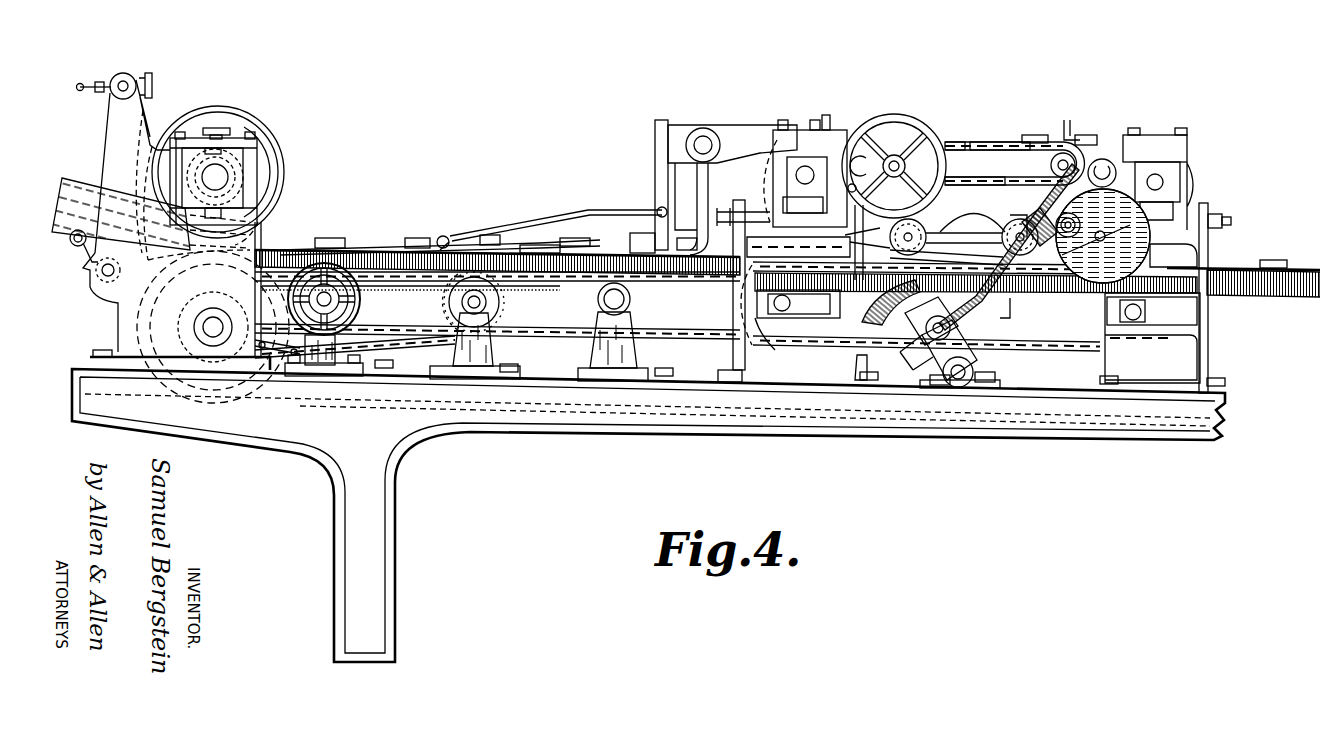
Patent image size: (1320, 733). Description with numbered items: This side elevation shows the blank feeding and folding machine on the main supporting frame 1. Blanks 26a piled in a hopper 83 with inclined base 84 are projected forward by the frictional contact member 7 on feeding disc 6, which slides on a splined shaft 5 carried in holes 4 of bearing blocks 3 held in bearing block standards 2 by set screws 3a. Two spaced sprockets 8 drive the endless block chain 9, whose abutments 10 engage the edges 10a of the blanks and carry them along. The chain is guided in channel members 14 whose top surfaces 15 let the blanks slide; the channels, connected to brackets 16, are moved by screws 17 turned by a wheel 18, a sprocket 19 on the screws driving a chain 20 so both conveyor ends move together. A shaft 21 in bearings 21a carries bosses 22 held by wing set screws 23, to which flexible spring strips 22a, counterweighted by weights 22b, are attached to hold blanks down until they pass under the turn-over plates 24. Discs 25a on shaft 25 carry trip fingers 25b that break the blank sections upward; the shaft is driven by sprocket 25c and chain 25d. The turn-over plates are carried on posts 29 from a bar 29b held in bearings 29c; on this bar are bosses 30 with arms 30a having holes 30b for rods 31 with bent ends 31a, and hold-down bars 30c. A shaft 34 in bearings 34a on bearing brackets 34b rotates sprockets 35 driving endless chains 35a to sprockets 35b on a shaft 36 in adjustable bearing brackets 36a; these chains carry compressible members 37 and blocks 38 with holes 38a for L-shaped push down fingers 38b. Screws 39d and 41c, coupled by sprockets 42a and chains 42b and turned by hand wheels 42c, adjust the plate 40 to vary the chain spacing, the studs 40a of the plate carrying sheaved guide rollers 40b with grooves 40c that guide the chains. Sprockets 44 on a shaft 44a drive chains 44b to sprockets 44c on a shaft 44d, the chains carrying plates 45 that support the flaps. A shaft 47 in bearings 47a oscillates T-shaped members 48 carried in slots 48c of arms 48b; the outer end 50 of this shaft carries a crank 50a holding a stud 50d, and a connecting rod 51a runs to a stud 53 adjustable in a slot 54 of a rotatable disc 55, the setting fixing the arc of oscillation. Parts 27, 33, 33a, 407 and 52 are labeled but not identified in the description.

The main supporting frame 1 is at (578, 437).
The bearing block standards 2 is at (240, 142).
The bearing blocks 3 is at (228, 135).
The set screws 3a is at (212, 125).
The holes 4 is at (228, 175).
The splined shaft 5 is at (262, 150).
The feeding disc 6 is at (245, 108).
The frictional contact member 7 is at (255, 150).
The sprockets 8 is at (130, 326).
The endless block chain 9 is at (397, 245).
The abutments 10 is at (518, 250).
The edges of the blanks 10a is at (543, 240).
The channel members 14 is at (422, 262).
The top surfaces of the channels 15 is at (485, 258).
The brackets 16 is at (305, 262).
The screws 17 is at (326, 288).
The wheel 18 is at (366, 250).
The sprocket 19 is at (291, 357).
The chain 20 is at (492, 338).
The shaft 21 is at (126, 86).
The bearings 21a is at (120, 73).
The bosses 22 is at (150, 82).
The flexible spring strips 22a is at (150, 100).
The weights 22b is at (441, 236).
The wing set screws 23 is at (104, 80).
The turn-over plates 24 is at (598, 240).
The shaft 25 is at (488, 300).
The discs 25a is at (503, 310).
The trip fingers 25b is at (497, 269).
The sprocket 25c is at (130, 343).
The chain 25d is at (402, 352).
The blanks 26a is at (392, 250).
The bar 27 is at (548, 240).
The downwardly extending posts 29 is at (656, 228).
The bar 29b is at (705, 138).
The bearings 29c is at (718, 138).
The bosses 30 is at (678, 128).
The downwardly extending arms 30a is at (660, 135).
The holes 30b is at (666, 208).
The hold-down bars 30c is at (512, 224).
The rods 31 is at (568, 245).
The bent ends 31a is at (432, 260).
The rail 33 is at (716, 226).
The rail block 33a is at (826, 252).
The shaft 34 is at (815, 140).
The bearings 34a is at (812, 170).
The bearing brackets 34b is at (735, 300).
The sprockets 35 is at (800, 135).
The endless chains 35a is at (962, 150).
The sprockets 35b is at (1164, 180).
The shaft 36 is at (1185, 160).
The adjustable bearing brackets 36a is at (1205, 205).
The compressible members 37 is at (1030, 142).
The blocks 38 is at (1112, 152).
The holes 38a is at (1090, 135).
The L-shaped push down fingers 38b is at (1075, 122).
The screws 39d is at (898, 160).
The plate 40 is at (1024, 240).
The studs 40a is at (925, 233).
The sheaved guide rollers 40b is at (927, 237).
The grooves 40c is at (1013, 225).
The bar 407 is at (946, 241).
The screws 41c is at (1050, 168).
The sprockets 42a is at (940, 140).
The chains 42b is at (985, 140).
The hand wheels 42c is at (945, 165).
The sprockets 44 is at (760, 340).
The shaft 44a is at (784, 312).
The chains 44b is at (1015, 340).
The sprockets 44c is at (1120, 340).
The shaft 44d is at (1136, 320).
The plates 45 is at (1000, 352).
The shaft 47 is at (955, 380).
The bearings 47a is at (925, 382).
The T-shaped members 48 is at (862, 362).
The arms 48b is at (920, 366).
The slots 48c is at (885, 322).
The outer end of the oscillating shaft 50 is at (975, 370).
The crank 50a is at (960, 345).
The stud 50d is at (955, 328).
The connecting rod 51a is at (1010, 310).
The disc 52 is at (1062, 250).
The stud 53 is at (1072, 222).
The slot 54 is at (1103, 232).
The rotatable disc 55 is at (1138, 258).
The hopper 83 is at (66, 185).
The inclined base 84 is at (75, 244).